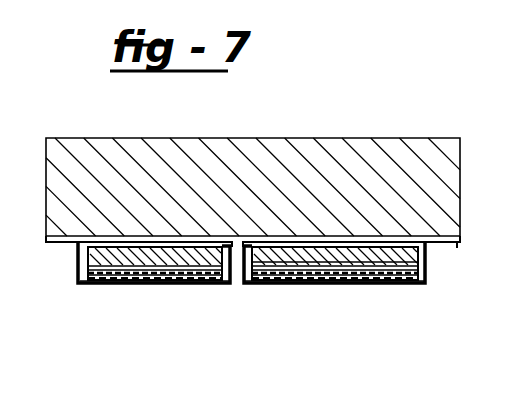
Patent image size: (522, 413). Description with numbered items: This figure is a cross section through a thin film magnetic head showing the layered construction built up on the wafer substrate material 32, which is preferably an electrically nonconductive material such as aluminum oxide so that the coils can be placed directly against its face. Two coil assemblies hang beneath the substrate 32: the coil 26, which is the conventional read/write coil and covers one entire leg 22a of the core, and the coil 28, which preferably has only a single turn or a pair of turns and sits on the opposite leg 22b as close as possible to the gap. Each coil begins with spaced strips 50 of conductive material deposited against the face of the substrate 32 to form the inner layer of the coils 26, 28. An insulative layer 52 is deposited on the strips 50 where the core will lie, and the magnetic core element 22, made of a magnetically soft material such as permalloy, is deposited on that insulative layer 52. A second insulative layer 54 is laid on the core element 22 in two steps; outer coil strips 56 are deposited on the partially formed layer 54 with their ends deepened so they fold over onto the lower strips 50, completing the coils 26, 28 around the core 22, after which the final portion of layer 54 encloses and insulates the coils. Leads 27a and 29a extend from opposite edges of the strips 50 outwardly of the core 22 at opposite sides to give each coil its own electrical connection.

The wafer substrate material 32 is at (341, 143).
The lead 29a is at (62, 244).
The second insulative layer 54 is at (116, 272).
The leg of the core 22b is at (156, 264).
The coil 28 is at (187, 276).
The insulative layer 52 is at (206, 264).
The magnetic core element 22 is at (262, 284).
The spaced strips of conductive material 50 is at (281, 284).
The coil 26 is at (319, 284).
The outer coil strips 56 is at (344, 284).
The leg of the core 22a is at (363, 284).
The lead 27a is at (438, 246).